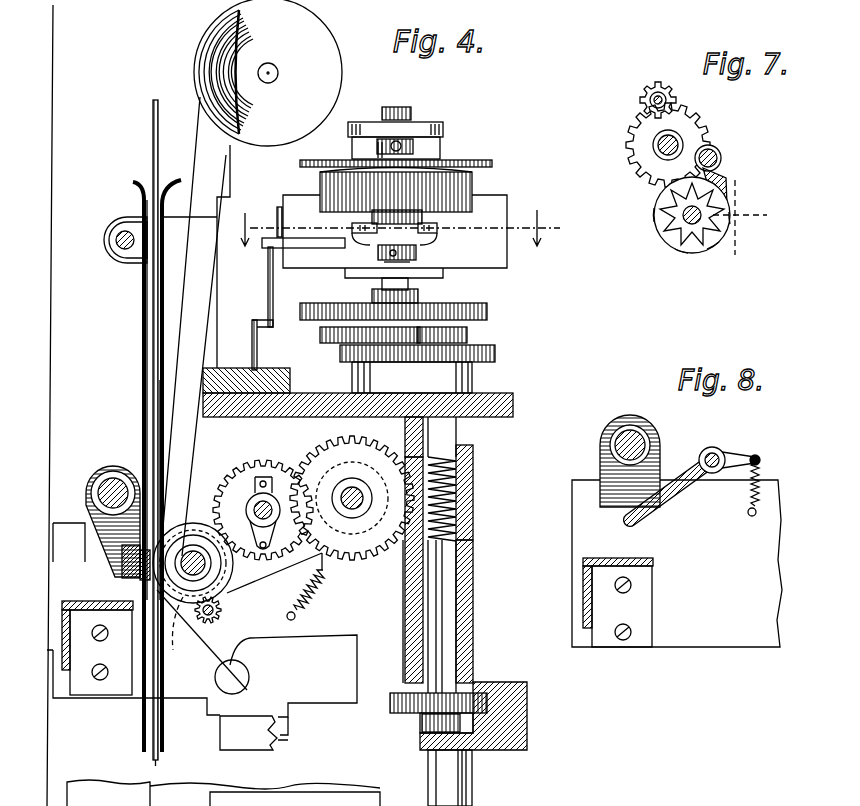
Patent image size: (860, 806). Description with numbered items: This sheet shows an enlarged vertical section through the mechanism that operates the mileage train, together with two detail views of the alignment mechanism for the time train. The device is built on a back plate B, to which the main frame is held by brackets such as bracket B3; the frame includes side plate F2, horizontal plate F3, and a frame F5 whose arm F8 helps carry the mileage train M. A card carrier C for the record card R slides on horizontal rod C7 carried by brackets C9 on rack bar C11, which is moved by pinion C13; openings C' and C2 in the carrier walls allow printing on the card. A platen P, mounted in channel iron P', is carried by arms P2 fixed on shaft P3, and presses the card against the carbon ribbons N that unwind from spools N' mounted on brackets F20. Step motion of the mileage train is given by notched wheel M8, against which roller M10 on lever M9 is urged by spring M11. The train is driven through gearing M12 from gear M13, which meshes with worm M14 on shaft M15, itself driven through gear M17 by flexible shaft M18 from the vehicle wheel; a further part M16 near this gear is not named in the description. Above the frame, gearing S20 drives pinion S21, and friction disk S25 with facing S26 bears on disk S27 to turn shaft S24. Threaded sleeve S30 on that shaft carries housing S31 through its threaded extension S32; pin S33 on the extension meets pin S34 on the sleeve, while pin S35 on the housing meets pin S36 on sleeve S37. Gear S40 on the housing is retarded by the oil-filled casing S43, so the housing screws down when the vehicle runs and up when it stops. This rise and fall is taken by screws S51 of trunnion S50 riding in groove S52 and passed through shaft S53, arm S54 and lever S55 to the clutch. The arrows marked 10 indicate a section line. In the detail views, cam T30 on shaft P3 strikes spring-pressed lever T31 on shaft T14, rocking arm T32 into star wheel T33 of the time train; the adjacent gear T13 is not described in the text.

In FIG. 4, the spool N' is at (268, 73).
In FIG. 4, the carbon ribbon N is at (193, 329).
In FIG. 4, the record card R is at (153, 106).
In FIG. 4, the card carrier C is at (120, 465).
In FIG. 4, the bracket C9 is at (198, 227).
In FIG. 4, the pinion C13 is at (108, 230).
In FIG. 4, the horizontal rod C7 is at (112, 264).
In FIG. 4, the opening C' is at (118, 400).
In FIG. 4, the opening C2 is at (157, 378).
In FIG. 4, the rack bar C11 is at (288, 730).
In FIG. 4, the bracket F20 is at (213, 256).
In FIG. 4, the section line 10 is at (394, 228).
In FIG. 4, the shaft S24 is at (405, 135).
In FIG. 4, the pin S35 is at (368, 125).
In FIG. 4, the sleeve S37 is at (418, 150).
In FIG. 4, the pin S36 is at (413, 160).
In FIG. 4, the gear S40 is at (480, 163).
In FIG. 4, the housing S31 is at (474, 188).
In FIG. 4, the groove S52 is at (390, 217).
In FIG. 4, the casing S43 is at (507, 200).
In FIG. 4, the threaded extension S32 is at (372, 212).
In FIG. 4, the screws S51 is at (352, 229).
In FIG. 4, the trunnion S50 is at (450, 232).
In FIG. 4, the pin S34 is at (380, 252).
In FIG. 4, the pin S33 is at (440, 257).
In FIG. 4, the arm S54 is at (270, 250).
In FIG. 4, the shaft S53 is at (327, 250).
In FIG. 4, the lever S55 is at (252, 330).
In FIG. 4, the horizontal plate F3 is at (240, 358).
In FIG. 4, the frame F5 is at (513, 405).
In FIG. 4, the threaded sleeve S30 is at (420, 290).
In FIG. 4, the disk S27 is at (487, 307).
In FIG. 4, the friction facing S26 is at (488, 322).
In FIG. 4, the disk S25 is at (470, 335).
In FIG. 4, the pinion S21 is at (495, 350).
In FIG. 4, the gearing S20 is at (473, 370).
In FIG. 4, the worm M14 is at (460, 510).
In FIG. 4, the shaft M15 is at (440, 640).
In FIG. 4, the gear M16 is at (495, 692).
In FIG. 4, the gear M17 is at (527, 702).
In FIG. 4, the flexible shaft M18 is at (457, 777).
In FIG. 4, the bar F8 is at (387, 623).
In FIG. 4, the gear M13 is at (368, 468).
In FIG. 4, the gearing M12 is at (282, 440).
In FIG. 4, the mileage train M is at (196, 519).
In FIG. 4, the roller M10 is at (222, 604).
In FIG. 4, the lever M9 is at (258, 582).
In FIG. 4, the spring M11 is at (323, 584).
In FIG. 4, the notched wheel M8 is at (203, 642).
In FIG. 4, the bracket B3 is at (293, 676).
In FIG. 8, the bracket B3 is at (677, 563).
In FIG. 4, the side plate F2 is at (226, 717).
In FIG. 4, the back plate B is at (50, 723).
In FIG. 4, the arm P2 is at (92, 477).
In FIG. 4, the shaft P3 is at (117, 473).
In FIG. 8, the shaft P3 is at (630, 430).
In FIG. 4, the platen P is at (106, 571).
In FIG. 4, the channel iron P' is at (87, 550).
In FIG. 7, the gear T13 is at (632, 125).
In FIG. 7, the shaft T14 is at (717, 157).
In FIG. 8, the shaft T14 is at (720, 450).
In FIG. 7, the arm T32 is at (727, 180).
In FIG. 7, the star wheel T33 is at (707, 222).
In FIG. 8, the cam T30 is at (620, 500).
In FIG. 8, the spring-pressed lever T31 is at (660, 510).